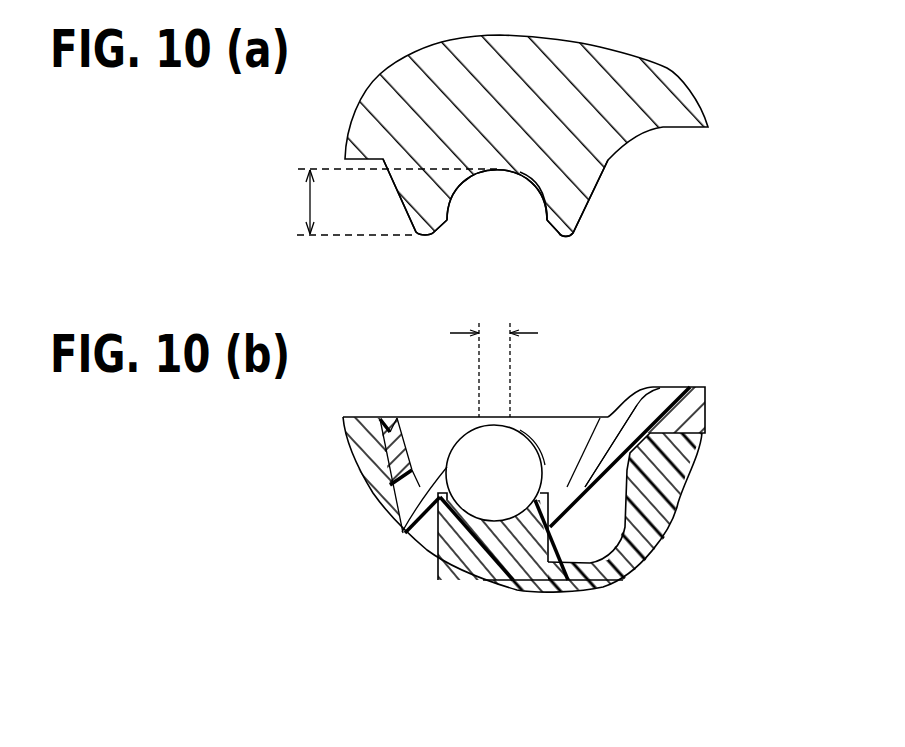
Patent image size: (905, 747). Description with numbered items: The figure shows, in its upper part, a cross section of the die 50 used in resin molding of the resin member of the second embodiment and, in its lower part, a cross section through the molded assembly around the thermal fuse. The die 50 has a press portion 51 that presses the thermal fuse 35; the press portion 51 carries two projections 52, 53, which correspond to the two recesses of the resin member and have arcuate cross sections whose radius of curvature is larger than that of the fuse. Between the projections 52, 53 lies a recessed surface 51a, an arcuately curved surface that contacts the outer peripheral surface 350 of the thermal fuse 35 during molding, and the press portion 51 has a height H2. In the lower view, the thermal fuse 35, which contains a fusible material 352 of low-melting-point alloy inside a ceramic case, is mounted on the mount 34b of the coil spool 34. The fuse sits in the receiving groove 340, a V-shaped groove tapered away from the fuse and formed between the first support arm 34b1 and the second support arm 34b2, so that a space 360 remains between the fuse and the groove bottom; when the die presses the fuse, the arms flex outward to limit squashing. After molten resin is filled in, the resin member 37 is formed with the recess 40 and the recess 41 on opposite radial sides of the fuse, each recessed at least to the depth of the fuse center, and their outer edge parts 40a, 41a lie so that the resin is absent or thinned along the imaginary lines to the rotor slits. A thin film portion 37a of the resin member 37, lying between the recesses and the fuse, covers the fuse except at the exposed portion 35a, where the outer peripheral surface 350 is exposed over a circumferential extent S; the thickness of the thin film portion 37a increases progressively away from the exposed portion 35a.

In FIG. 10a, the die 50 is at (584, 42).
In FIG. 10a, the press portion 51 is at (493, 175).
In FIG. 10a, the recessed surface 51a is at (533, 183).
In FIG. 10a, the projection 52 is at (574, 200).
In FIG. 10a, the projection 53 is at (422, 192).
In FIG. 10a, the height of the press portion H2 is at (308, 202).
In FIG. 10b, the coil spool 34 is at (660, 497).
In FIG. 10b, the mount 34b is at (570, 562).
In FIG. 10b, the first support arm 34b1 is at (434, 552).
In FIG. 10b, the second support arm 34b2 is at (655, 533).
In FIG. 10b, the thermal fuse 35 is at (493, 535).
In FIG. 10b, the exposed portion 35a is at (510, 425).
In FIG. 10b, the resin member 37 is at (637, 418).
In FIG. 10b, the thin film portion 37a is at (527, 438).
In FIG. 10b, the recess 40 is at (568, 487).
In FIG. 10b, the outer edge part 40a is at (588, 430).
In FIG. 10b, the recess 41 is at (424, 487).
In FIG. 10b, the outer edge part 41a is at (420, 488).
In FIG. 10b, the receiving groove 340 is at (493, 482).
In FIG. 10b, the outer peripheral surface 350 is at (525, 545).
In FIG. 10b, the fusible material 352 is at (405, 533).
In FIG. 10b, the space 360 is at (467, 540).
In FIG. 10b, the circumferential extent S is at (498, 333).